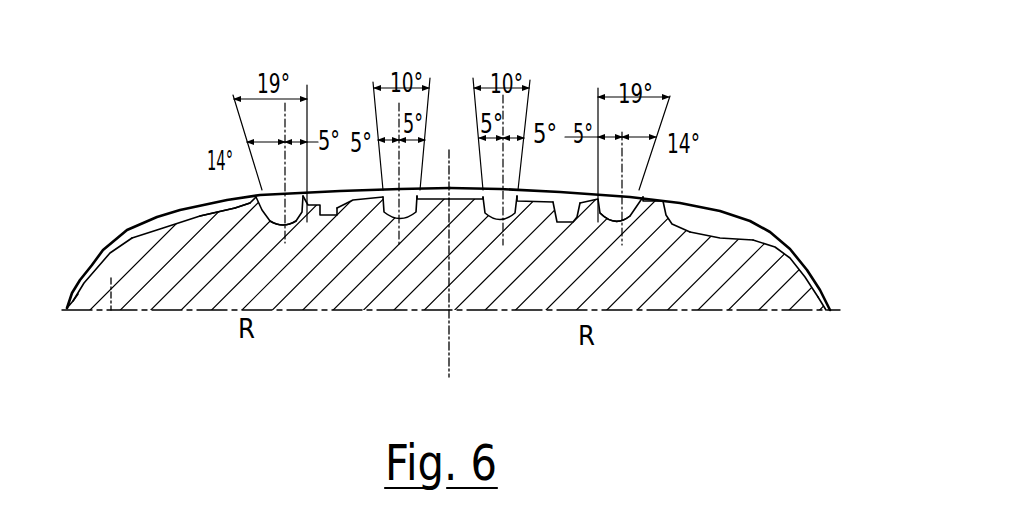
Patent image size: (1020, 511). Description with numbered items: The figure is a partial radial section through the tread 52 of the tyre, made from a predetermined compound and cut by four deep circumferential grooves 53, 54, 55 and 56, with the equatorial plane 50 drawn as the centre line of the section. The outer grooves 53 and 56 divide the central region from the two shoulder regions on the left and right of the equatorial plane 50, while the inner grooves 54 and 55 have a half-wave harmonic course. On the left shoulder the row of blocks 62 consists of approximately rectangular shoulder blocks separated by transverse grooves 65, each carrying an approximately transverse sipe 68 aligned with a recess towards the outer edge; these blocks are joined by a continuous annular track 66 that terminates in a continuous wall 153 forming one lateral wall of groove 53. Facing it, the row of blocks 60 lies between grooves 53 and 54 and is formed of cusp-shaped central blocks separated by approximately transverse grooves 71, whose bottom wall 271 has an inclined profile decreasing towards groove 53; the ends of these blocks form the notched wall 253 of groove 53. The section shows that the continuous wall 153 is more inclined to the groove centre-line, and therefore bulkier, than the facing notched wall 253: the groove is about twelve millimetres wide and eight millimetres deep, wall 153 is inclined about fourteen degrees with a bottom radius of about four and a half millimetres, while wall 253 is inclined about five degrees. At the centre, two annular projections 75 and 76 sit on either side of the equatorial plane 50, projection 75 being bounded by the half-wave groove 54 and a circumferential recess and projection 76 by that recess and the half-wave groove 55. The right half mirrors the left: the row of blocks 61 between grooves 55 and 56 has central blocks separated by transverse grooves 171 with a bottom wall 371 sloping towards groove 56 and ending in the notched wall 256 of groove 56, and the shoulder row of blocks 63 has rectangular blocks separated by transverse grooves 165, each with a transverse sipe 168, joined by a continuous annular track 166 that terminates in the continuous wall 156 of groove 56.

The equatorial plane 50 is at (449, 365).
The tread 52 is at (448, 165).
The circumferential groove 53 is at (274, 291).
The circumferential groove 54 is at (420, 222).
The circumferential groove 55 is at (517, 225).
The circumferential groove 56 is at (589, 287).
The circumferential row of blocks 60 is at (334, 187).
The circumferential row of blocks 61 is at (556, 190).
The circumferential row of blocks 62 is at (161, 248).
The circumferential row of blocks 63 is at (738, 239).
The transverse grooves 65 is at (160, 280).
The continuous annular track 66 is at (245, 190).
The transverse sipe 68 is at (110, 314).
The transverse grooves 71 is at (372, 201).
The annular projection 75 is at (440, 190).
The annular projection 76 is at (470, 190).
The continuous wall 153 is at (252, 216).
The continuous wall 156 is at (663, 208).
The transverse grooves 165 is at (684, 218).
The continuous annular track 166 is at (650, 197).
The transverse sipe 168 is at (791, 312).
The transverse grooves 171 is at (565, 228).
The notched wall 253 is at (278, 238).
The notched wall 256 is at (606, 238).
The bottom wall 271 is at (328, 218).
The bottom wall 371 is at (553, 221).